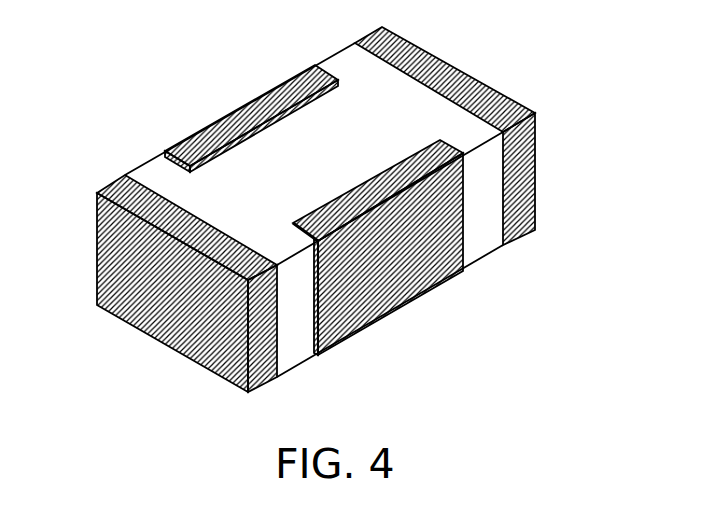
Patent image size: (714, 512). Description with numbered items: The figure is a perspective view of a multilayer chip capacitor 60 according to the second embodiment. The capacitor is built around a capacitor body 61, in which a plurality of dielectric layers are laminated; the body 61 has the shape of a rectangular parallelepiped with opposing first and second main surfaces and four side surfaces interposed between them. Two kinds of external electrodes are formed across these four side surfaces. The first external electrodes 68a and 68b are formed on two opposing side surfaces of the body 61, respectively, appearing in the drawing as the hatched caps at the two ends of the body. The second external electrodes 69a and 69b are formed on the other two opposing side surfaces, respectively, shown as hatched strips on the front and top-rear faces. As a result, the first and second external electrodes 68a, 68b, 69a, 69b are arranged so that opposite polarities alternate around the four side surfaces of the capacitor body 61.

The multilayer chip capacitor 60 is at (113, 41).
The capacitor body 61 is at (293, 347).
The first external electrode 68a is at (135, 315).
The first external electrode 68b is at (528, 162).
The second external electrode 69a is at (395, 285).
The second external electrode 69b is at (243, 115).